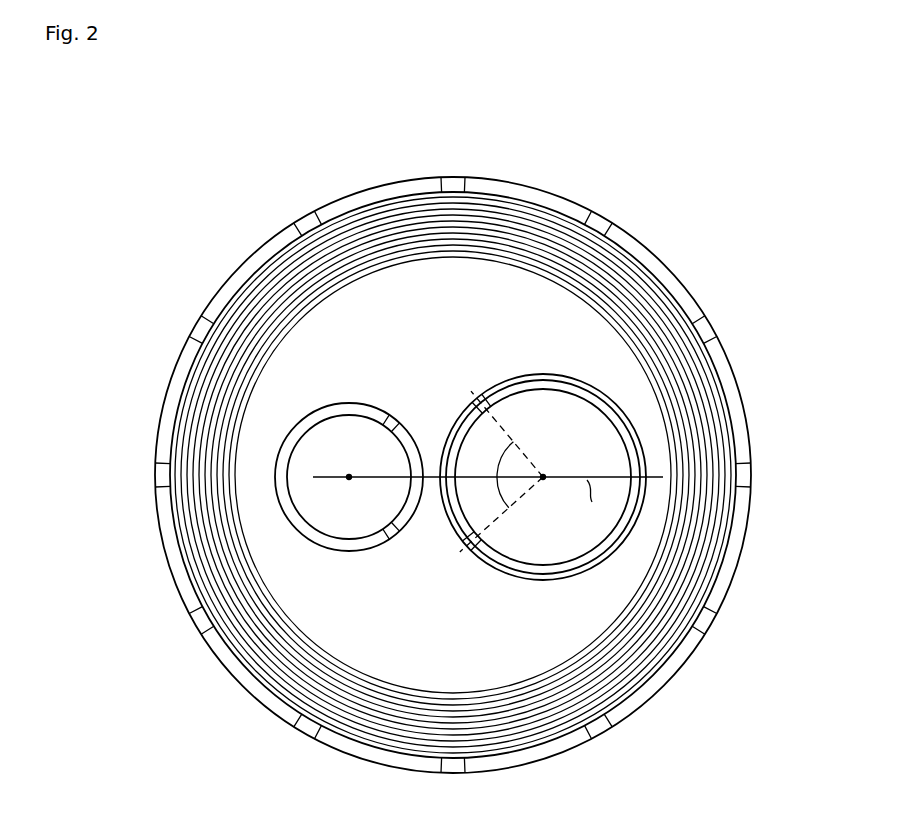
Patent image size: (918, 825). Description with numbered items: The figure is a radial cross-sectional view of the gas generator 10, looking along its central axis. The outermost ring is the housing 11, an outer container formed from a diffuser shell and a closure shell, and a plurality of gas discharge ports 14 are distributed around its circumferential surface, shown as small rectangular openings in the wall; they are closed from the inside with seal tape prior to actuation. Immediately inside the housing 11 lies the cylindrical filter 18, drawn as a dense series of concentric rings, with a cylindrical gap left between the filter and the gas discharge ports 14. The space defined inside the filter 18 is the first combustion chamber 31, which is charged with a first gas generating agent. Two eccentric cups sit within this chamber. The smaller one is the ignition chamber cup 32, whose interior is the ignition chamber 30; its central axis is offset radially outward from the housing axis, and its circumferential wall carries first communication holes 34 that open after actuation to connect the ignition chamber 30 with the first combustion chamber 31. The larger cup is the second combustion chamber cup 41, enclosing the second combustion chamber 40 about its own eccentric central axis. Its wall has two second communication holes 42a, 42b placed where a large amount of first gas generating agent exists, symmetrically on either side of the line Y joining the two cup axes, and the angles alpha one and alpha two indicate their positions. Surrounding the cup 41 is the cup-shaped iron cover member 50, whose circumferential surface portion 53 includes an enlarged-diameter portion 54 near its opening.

The gas generator 10 is at (562, 180).
The housing 11 is at (228, 672).
The gas discharge ports 14 is at (743, 482).
The cylindrical filter 18 is at (698, 398).
The ignition chamber 30 is at (366, 456).
The first combustion chamber 31 is at (462, 667).
The ignition chamber cup 32 is at (330, 418).
The first communication holes 34 is at (388, 414).
The second combustion chamber 40 is at (556, 432).
The second combustion chamber cup 41 is at (597, 410).
The second communication hole 42a is at (483, 400).
The second communication hole 42b is at (472, 553).
The cover member 50 is at (578, 360).
The circumferential surface portion 53 is at (650, 506).
The enlarged-diameter portion 54 is at (645, 480).